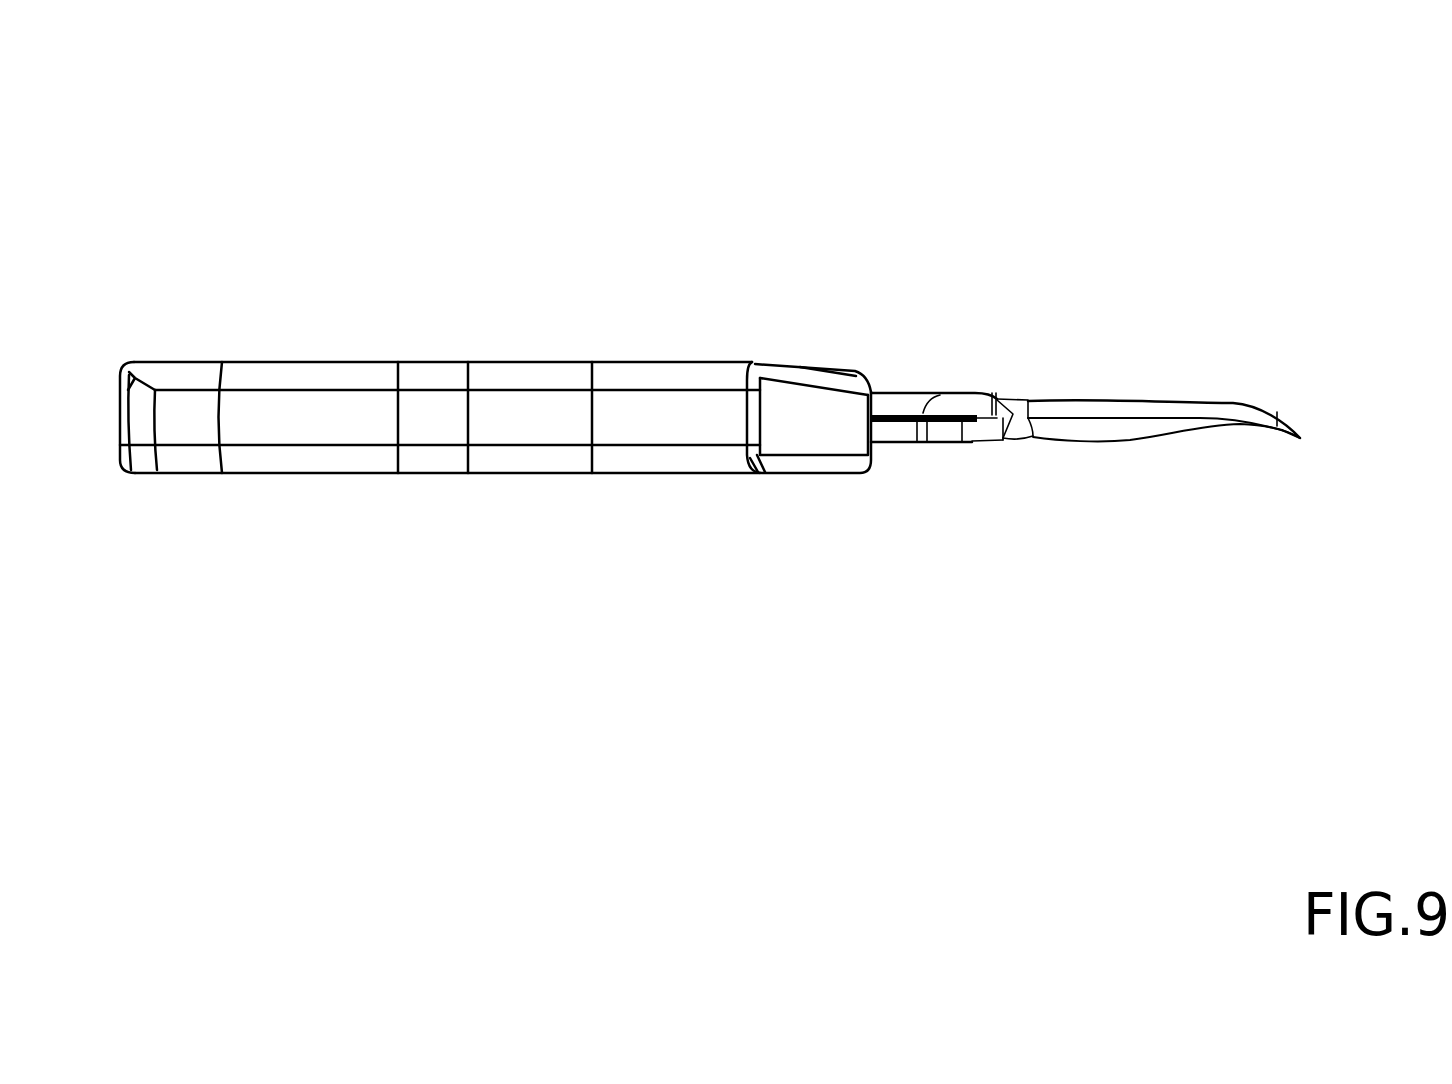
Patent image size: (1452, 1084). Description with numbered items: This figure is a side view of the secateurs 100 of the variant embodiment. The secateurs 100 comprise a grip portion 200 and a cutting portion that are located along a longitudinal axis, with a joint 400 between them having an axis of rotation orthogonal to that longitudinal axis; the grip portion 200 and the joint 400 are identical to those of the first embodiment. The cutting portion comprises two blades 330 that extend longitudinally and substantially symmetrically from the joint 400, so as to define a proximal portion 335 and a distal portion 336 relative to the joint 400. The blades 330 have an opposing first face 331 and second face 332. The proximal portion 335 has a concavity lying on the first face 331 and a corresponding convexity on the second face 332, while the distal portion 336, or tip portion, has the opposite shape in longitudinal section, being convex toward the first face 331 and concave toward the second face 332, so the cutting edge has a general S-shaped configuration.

The secateurs 100 is at (393, 252).
The grip portion 200 is at (437, 525).
The joint 400 is at (962, 470).
The blades 330 is at (1082, 463).
The first face 331 is at (1118, 390).
The second face 332 is at (1123, 463).
The proximal portion 335 is at (1045, 373).
The distal portion 336 is at (1248, 390).